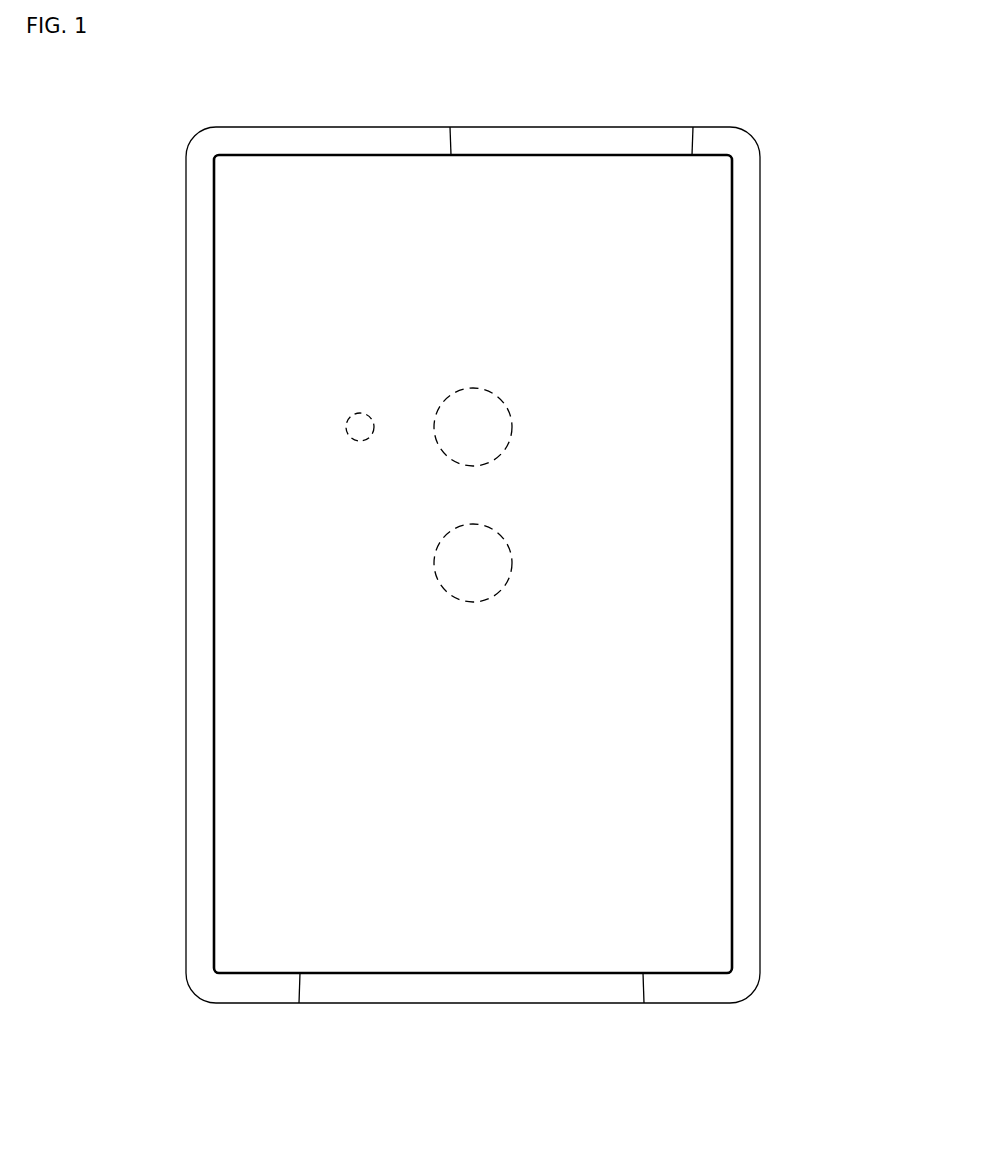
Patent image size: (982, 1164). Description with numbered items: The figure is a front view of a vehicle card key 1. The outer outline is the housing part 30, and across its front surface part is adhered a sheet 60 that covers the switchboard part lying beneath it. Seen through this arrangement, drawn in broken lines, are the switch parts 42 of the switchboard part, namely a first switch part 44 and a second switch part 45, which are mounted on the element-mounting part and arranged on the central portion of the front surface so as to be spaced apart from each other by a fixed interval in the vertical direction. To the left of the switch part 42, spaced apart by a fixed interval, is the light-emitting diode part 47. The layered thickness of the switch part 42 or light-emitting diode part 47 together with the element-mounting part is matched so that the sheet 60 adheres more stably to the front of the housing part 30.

The vehicle card key 1 is at (789, 191).
The housing part 30 is at (710, 946).
The sheet 60 is at (667, 688).
The switch part 42 is at (845, 394).
The first switch part 44 is at (512, 423).
The second switch part 45 is at (512, 558).
The light-emitting diode part 47 is at (347, 418).